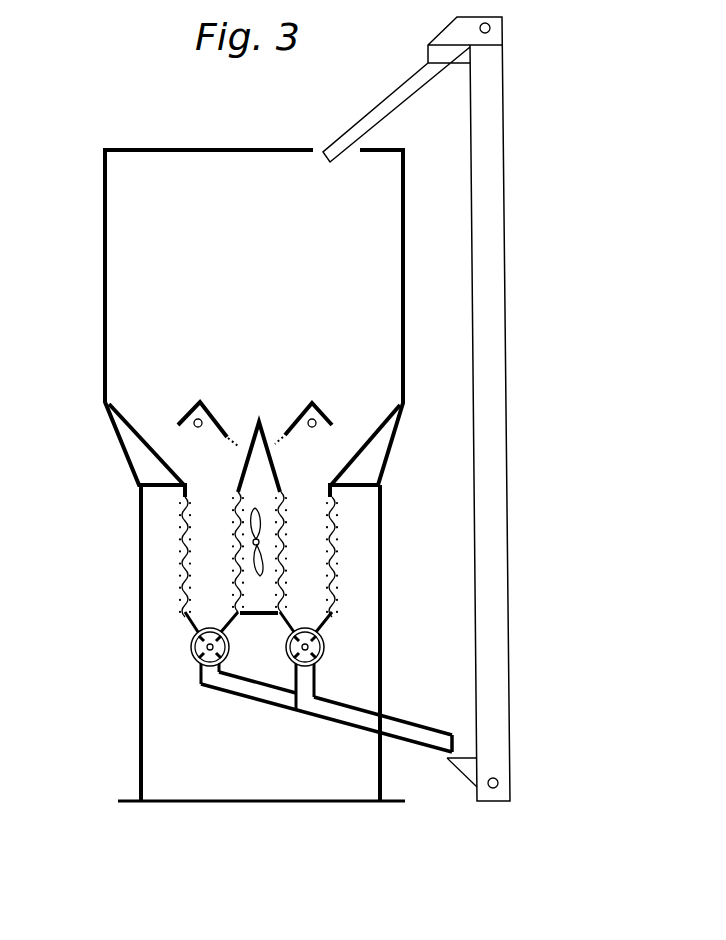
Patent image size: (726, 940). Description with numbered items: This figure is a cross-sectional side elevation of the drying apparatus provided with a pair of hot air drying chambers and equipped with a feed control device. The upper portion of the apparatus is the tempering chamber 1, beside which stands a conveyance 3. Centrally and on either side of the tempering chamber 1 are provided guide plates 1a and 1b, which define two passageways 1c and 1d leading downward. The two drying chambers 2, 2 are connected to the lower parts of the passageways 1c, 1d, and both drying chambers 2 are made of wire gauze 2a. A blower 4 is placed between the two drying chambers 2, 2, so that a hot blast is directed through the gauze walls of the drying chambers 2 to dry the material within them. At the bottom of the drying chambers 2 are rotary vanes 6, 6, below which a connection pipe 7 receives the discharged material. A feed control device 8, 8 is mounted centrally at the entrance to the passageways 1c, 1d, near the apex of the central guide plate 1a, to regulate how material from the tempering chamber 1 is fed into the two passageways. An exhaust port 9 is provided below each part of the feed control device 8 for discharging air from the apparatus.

The tempering chamber 1 is at (142, 245).
The guide plate 1a is at (260, 421).
The guide plate 1b is at (137, 427).
The passageway 1c is at (200, 462).
The passageway 1d is at (307, 462).
The drying chamber 2 is at (210, 608).
The wire gauze 2a is at (240, 560).
The conveyance 3 is at (495, 282).
The blower 4 is at (248, 568).
The rotary vane 6 is at (193, 657).
The connection pipe 7 is at (300, 712).
The feed control device 8 is at (199, 401).
The exhaust port 9 is at (196, 425).